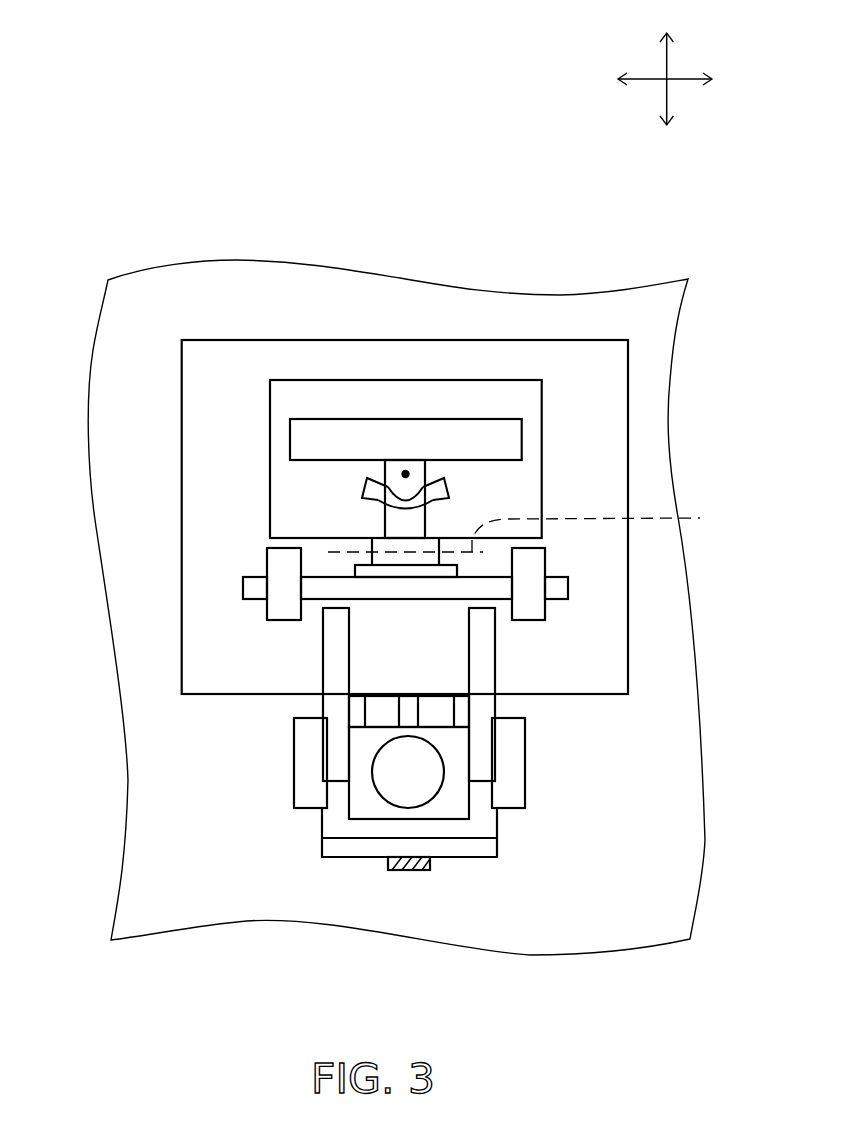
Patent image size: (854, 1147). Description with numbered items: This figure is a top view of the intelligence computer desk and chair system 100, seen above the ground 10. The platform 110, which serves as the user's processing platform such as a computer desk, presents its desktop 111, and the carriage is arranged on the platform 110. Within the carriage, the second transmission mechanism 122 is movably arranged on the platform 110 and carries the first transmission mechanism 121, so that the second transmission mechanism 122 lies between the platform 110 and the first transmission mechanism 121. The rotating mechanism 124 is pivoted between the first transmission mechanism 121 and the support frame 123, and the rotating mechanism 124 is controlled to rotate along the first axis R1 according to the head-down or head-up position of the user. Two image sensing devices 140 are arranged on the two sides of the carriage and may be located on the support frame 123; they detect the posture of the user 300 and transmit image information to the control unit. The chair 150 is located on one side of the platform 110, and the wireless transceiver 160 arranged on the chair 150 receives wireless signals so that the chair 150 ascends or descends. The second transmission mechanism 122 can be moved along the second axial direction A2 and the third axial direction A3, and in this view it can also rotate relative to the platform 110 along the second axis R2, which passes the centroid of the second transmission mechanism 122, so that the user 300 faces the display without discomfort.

The ground 10 is at (120, 353).
The intelligence computer desk and chair system 100 is at (713, 1013).
The platform 110 is at (180, 542).
The desktop 111 is at (216, 647).
The first transmission mechanism 121 is at (452, 440).
The second transmission mechanism 122 is at (510, 400).
The support frame 123 is at (252, 590).
The rotating mechanism 124 is at (370, 548).
The image sensing device 140 is at (283, 607).
The chair 150 is at (297, 835).
The wireless transceiver 160 is at (412, 872).
The user 300 is at (458, 802).
The first axis R1 is at (532, 528).
The second axis R2 is at (406, 462).
The second axial direction A2 is at (668, 66).
The third axial direction A3 is at (681, 80).